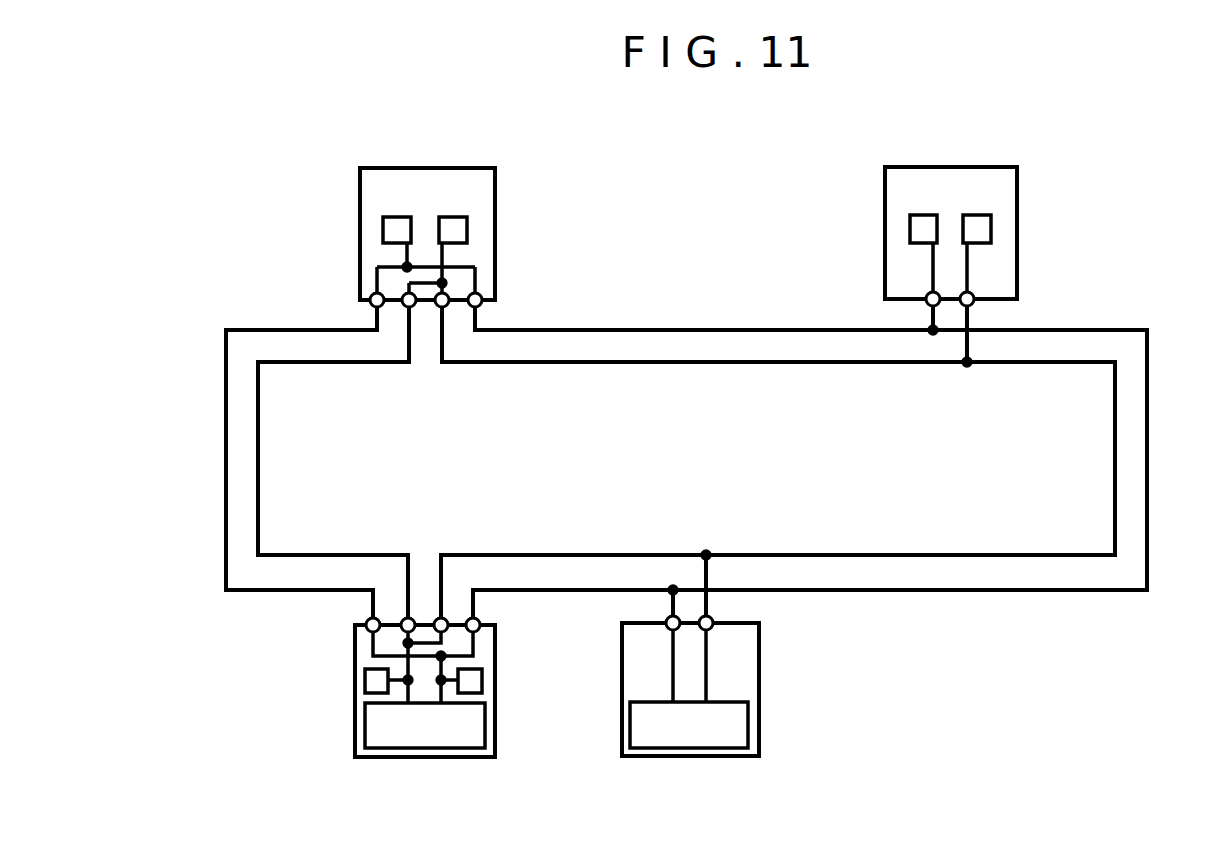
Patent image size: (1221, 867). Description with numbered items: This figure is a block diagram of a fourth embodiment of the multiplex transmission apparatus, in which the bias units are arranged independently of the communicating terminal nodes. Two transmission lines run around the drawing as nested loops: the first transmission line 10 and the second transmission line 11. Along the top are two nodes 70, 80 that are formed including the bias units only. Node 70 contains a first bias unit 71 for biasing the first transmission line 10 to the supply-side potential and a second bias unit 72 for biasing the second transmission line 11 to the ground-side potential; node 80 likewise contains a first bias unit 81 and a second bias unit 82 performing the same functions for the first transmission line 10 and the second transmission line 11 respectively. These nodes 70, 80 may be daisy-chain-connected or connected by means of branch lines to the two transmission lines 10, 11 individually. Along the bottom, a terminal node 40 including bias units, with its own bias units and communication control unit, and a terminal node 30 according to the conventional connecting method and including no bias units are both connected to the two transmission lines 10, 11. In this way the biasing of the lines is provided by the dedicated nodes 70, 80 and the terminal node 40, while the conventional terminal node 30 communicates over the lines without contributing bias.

The first transmission line 10 is at (260, 452).
The second transmission line 11 is at (226, 452).
The terminal node 30 is at (718, 756).
The terminal node including bias units 40 is at (470, 738).
The node 70 is at (455, 168).
The first bias unit 71 is at (467, 228).
The second bias unit 72 is at (395, 230).
The node 80 is at (983, 167).
The first bias unit 81 is at (992, 226).
The second bias unit 82 is at (918, 227).